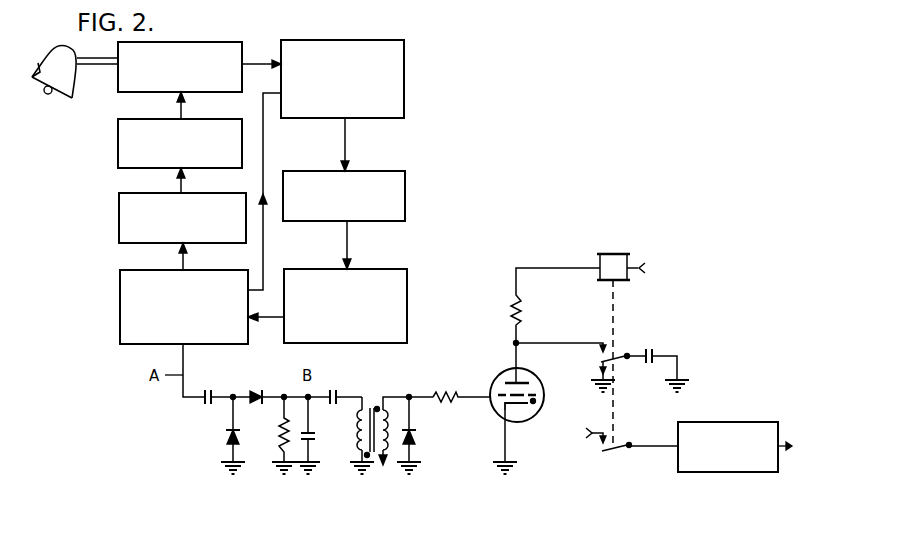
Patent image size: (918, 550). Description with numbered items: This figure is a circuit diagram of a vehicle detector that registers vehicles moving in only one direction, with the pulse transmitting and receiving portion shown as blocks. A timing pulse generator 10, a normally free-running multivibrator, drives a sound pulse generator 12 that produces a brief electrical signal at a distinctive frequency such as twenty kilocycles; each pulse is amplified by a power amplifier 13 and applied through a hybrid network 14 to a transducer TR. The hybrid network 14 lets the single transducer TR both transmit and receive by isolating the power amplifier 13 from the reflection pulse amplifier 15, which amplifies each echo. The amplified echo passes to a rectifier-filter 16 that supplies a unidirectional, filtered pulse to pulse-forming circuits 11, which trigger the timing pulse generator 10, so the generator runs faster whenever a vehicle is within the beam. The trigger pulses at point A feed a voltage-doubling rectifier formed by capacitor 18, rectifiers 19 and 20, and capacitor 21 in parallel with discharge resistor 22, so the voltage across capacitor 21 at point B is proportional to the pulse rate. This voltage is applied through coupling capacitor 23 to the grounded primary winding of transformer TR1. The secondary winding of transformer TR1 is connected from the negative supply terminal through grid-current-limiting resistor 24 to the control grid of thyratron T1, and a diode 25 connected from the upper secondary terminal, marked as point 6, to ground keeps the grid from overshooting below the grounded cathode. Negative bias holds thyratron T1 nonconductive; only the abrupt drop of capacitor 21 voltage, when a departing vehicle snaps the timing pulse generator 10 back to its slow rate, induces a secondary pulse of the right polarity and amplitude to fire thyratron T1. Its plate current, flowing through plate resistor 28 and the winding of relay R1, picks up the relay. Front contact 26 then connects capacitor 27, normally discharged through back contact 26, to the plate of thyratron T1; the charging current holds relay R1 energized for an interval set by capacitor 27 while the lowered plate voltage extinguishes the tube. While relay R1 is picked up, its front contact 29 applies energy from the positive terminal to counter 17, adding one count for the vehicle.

The timing pulse generator 10 is at (120, 300).
The pulse-forming circuits 11 is at (407, 300).
The sound pulse generator 12 is at (119, 222).
The power amplifier 13 is at (118, 150).
The hybrid network 14 is at (118, 85).
The reflection pulse amplifier 15 is at (404, 83).
The rectifier-filter 16 is at (405, 188).
The counter 17 is at (737, 422).
The capacitor 18 is at (208, 390).
The rectifier 19 is at (227, 440).
The rectifier 20 is at (257, 390).
The capacitor 21 is at (313, 438).
The discharge resistor 22 is at (280, 440).
The coupling capacitor 23 is at (333, 390).
The grid-current-limiting resistor 24 is at (447, 390).
The diode 25 is at (416, 438).
The front contact 26 is at (612, 352).
The capacitor 27 is at (654, 352).
The plate resistor 28 is at (519, 312).
The front contact 29 is at (607, 449).
The junction 6 is at (421, 397).
The transducer TR is at (48, 68).
The transformer TR1 is at (371, 406).
The thyratron T1 is at (536, 383).
The relay R1 is at (617, 246).